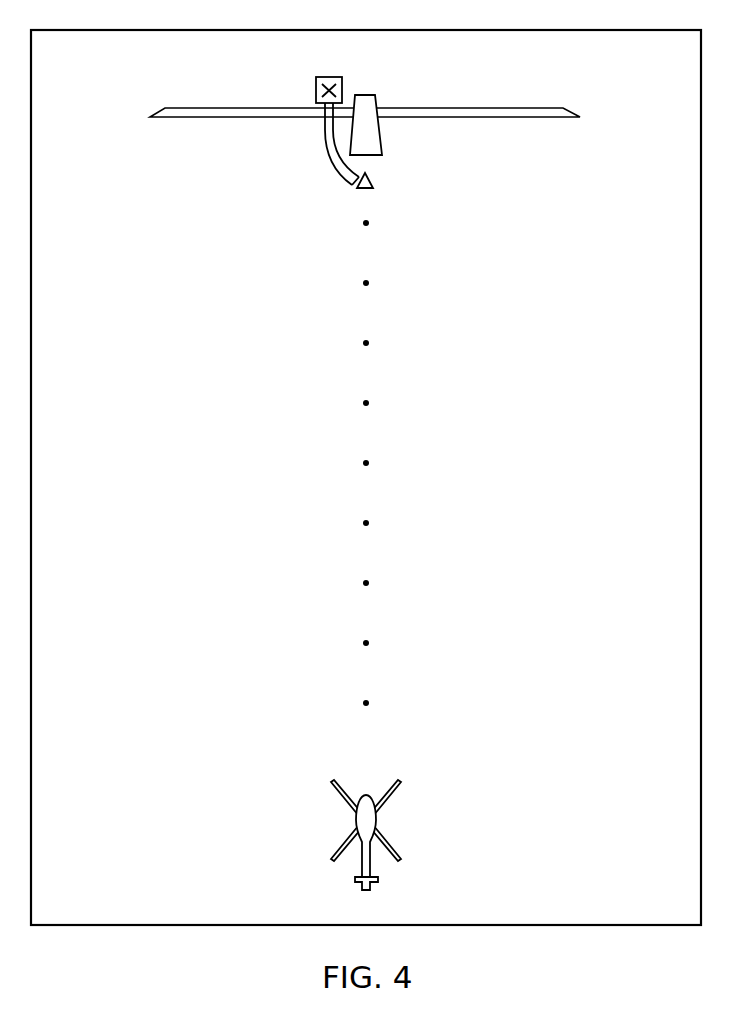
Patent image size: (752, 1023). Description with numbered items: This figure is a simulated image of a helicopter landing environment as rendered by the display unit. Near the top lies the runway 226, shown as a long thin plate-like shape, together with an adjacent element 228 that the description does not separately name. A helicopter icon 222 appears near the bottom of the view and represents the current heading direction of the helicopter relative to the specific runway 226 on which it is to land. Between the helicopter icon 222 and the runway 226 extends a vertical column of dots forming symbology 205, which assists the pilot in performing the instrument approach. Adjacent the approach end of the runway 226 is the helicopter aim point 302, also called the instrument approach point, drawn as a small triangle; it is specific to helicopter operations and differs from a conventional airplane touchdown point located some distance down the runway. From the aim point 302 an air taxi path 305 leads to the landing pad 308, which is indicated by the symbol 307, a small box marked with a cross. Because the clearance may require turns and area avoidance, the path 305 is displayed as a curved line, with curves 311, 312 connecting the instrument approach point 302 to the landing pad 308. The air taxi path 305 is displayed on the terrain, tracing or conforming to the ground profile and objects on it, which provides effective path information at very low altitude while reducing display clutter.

The plate / platform 228 is at (515, 108).
The air taxi path 305 is at (324, 130).
The curve 311 is at (342, 174).
The symbol 307 is at (315, 90).
The landing pad 308 is at (328, 77).
The runway 226 is at (377, 100).
The helicopter aim point 302 is at (373, 181).
The curve 312 is at (355, 169).
The symbology 205 is at (363, 403).
The helicopter icon 222 is at (378, 825).